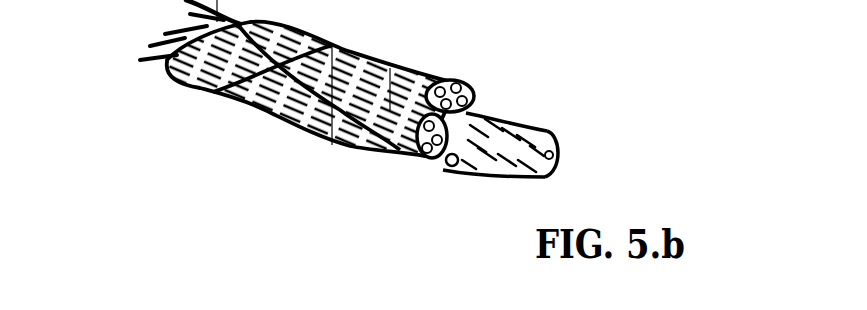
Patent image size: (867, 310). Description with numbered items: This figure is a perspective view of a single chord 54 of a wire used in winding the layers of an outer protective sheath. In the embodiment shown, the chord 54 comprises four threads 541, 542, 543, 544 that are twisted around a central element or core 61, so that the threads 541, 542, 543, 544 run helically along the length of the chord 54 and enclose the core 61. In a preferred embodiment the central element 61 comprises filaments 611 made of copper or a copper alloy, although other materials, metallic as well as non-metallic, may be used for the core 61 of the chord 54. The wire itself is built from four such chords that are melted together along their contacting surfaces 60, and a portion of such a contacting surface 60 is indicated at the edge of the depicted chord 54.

The chord 54 is at (378, 45).
The thread 541 is at (173, 80).
The thread 542 is at (233, 102).
The thread 543 is at (308, 135).
The thread 544 is at (380, 158).
The central element or core 61 is at (558, 138).
The filaments 611 is at (540, 185).
The contacting surfaces 60 is at (133, 11).